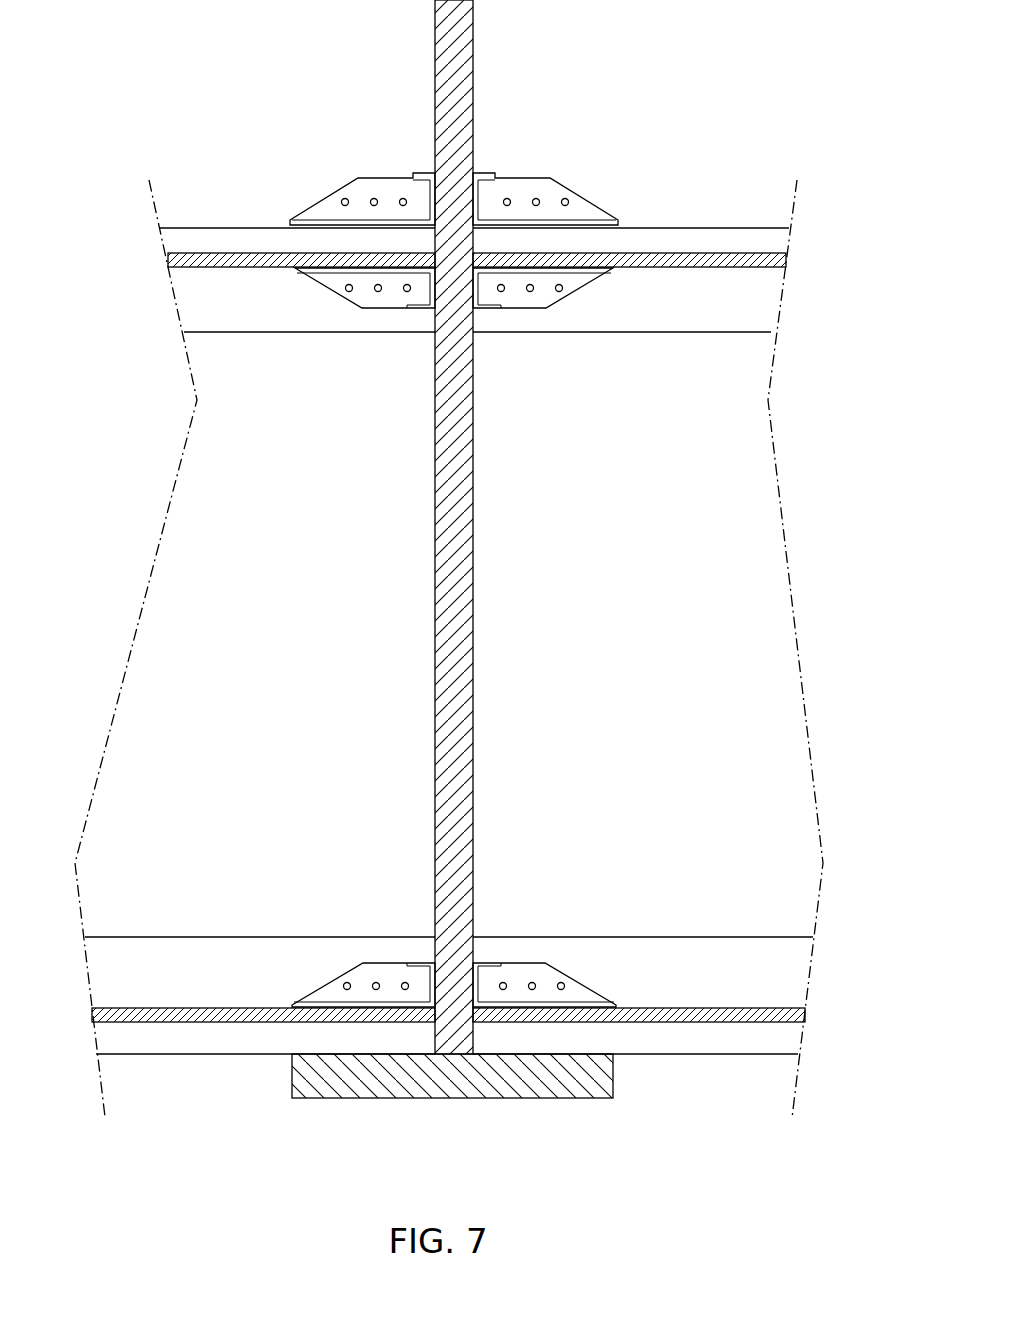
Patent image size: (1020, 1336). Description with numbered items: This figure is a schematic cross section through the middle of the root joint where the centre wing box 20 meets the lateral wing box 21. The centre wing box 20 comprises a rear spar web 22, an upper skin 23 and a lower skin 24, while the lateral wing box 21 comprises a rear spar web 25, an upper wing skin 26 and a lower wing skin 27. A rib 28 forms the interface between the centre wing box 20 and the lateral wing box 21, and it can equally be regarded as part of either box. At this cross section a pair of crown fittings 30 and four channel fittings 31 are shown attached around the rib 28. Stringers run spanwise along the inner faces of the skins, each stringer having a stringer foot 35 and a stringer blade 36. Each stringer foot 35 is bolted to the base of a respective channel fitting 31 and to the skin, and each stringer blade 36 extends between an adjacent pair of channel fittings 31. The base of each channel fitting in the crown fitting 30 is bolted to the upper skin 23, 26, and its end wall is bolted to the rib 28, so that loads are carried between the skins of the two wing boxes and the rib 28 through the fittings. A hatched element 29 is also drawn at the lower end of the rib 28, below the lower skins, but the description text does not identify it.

The centre wing box 20 is at (603, 637).
The lateral wing box 21 is at (273, 637).
The rear spar web 22 is at (777, 493).
The upper skin 23 is at (666, 228).
The lower skin 24 is at (684, 1054).
The rear spar web 25 is at (170, 502).
The upper wing skin 26 is at (219, 228).
The lower wing skin 27 is at (206, 1054).
The rib 28 is at (473, 702).
The base block 29 is at (425, 1098).
The crown fitting 30 is at (371, 178).
The channel fitting 31 is at (365, 308).
The stringer foot 35 is at (244, 267).
The stringer blade 36 is at (292, 332).